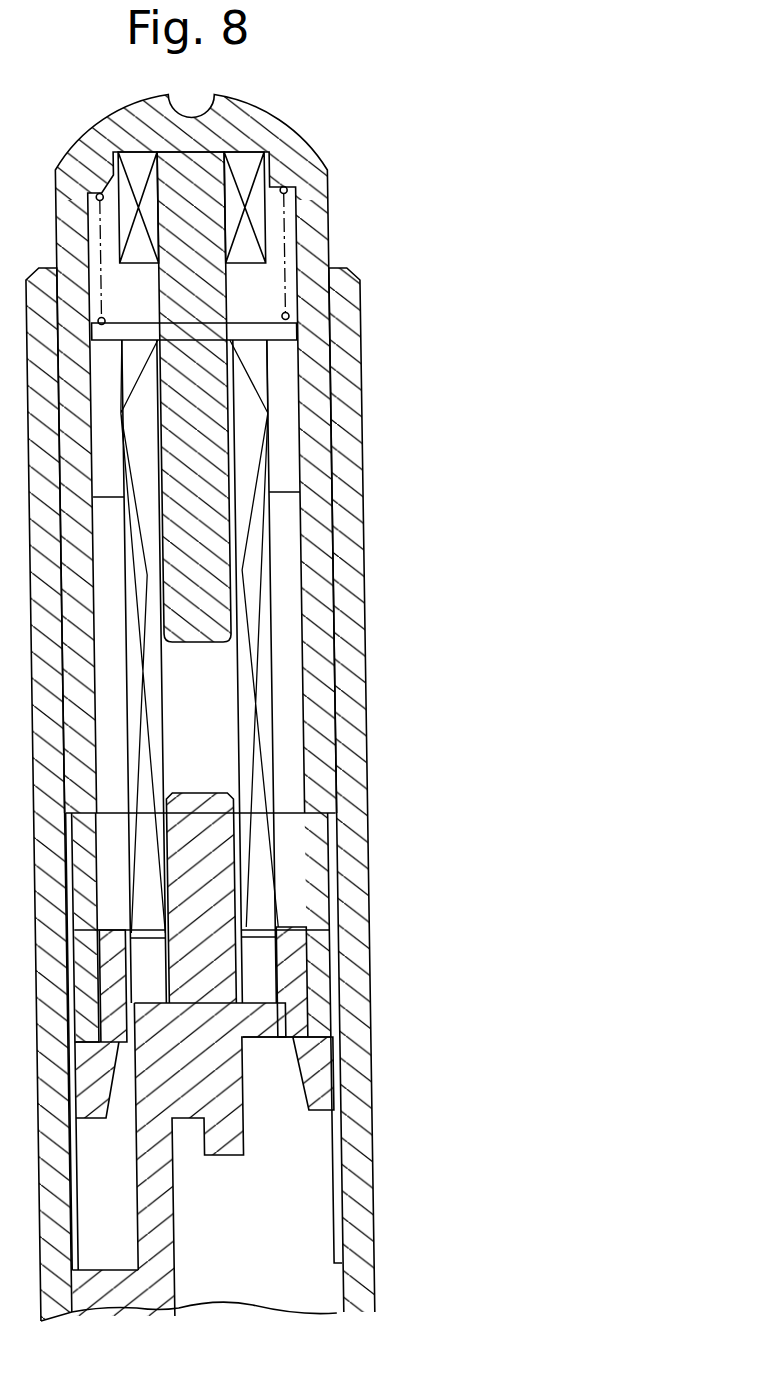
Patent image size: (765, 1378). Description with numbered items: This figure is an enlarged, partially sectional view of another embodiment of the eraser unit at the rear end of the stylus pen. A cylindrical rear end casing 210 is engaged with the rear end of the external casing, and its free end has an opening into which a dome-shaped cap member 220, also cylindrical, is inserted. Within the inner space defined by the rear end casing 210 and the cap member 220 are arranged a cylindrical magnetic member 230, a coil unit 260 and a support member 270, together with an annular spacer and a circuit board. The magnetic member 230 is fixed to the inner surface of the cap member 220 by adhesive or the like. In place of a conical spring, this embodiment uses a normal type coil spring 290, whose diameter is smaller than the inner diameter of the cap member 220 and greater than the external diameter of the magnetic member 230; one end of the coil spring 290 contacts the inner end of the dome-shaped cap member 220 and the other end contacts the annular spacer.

The rear end casing 210 is at (354, 621).
The cap member 220 is at (336, 199).
The magnetic member 230 is at (270, 182).
The coil unit 260 is at (269, 462).
The support member 270 is at (295, 1030).
The normal type coil spring 290 is at (295, 243).